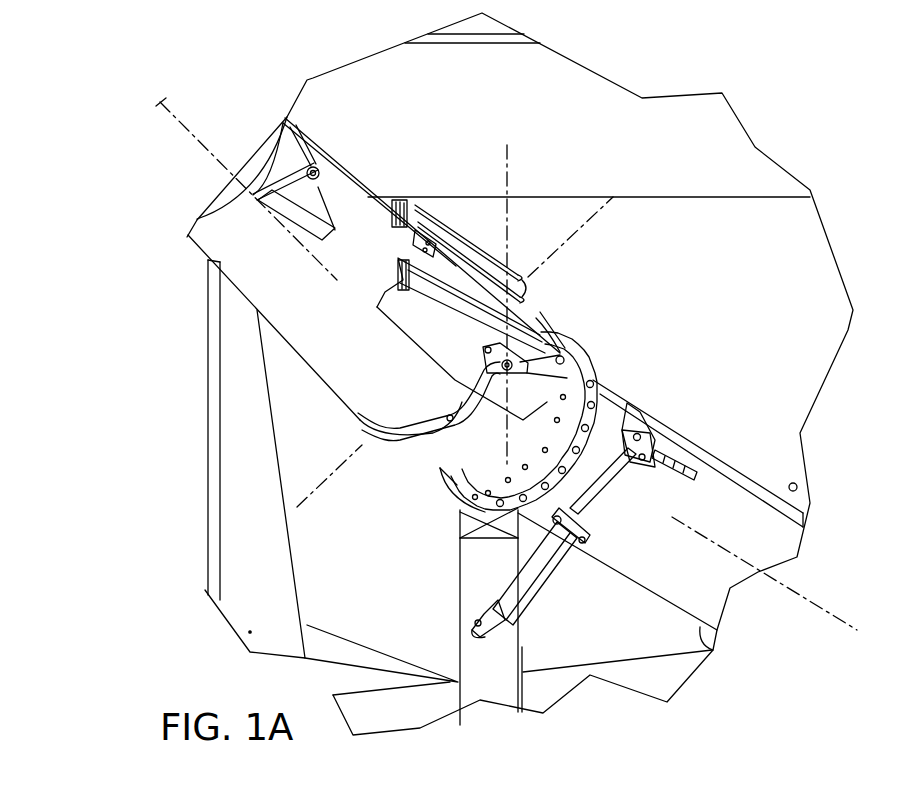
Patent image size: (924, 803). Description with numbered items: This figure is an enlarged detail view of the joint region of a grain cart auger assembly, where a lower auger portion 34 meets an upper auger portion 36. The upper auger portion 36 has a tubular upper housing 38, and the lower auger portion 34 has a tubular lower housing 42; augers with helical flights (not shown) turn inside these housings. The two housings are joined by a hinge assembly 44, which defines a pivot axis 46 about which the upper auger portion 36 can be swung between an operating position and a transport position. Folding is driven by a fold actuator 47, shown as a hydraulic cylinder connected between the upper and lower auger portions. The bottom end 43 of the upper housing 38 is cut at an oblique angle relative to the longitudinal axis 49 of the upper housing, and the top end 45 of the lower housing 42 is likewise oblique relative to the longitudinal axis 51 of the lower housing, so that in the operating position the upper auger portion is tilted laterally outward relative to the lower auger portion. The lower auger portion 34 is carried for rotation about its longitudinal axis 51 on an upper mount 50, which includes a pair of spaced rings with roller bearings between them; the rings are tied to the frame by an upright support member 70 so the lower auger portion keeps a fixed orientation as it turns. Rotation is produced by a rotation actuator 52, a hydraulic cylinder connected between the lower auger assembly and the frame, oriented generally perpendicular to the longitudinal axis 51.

The lower auger portion 34 is at (760, 465).
The upper auger portion 36 is at (243, 295).
The upper housing 38 is at (297, 347).
The lower housing 42 is at (695, 437).
The bottom end 43 is at (376, 425).
The hinge assembly 44 is at (528, 270).
The top end 45 is at (418, 437).
The pivot axis 46 is at (507, 160).
The fold actuator 47 is at (534, 318).
The longitudinal axis 49 is at (160, 113).
The upper mount 50 is at (596, 349).
The longitudinal axis 51 is at (823, 607).
The rotation actuator 52 is at (548, 590).
The support member 70 is at (460, 592).